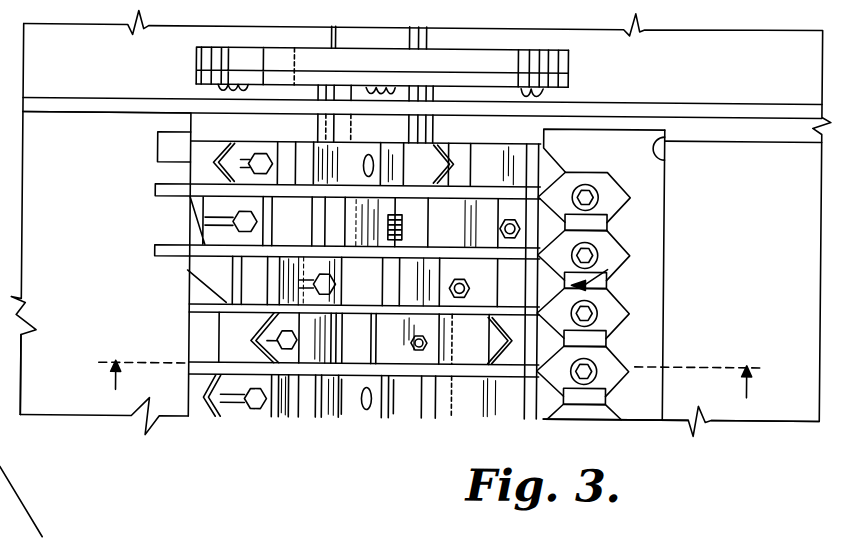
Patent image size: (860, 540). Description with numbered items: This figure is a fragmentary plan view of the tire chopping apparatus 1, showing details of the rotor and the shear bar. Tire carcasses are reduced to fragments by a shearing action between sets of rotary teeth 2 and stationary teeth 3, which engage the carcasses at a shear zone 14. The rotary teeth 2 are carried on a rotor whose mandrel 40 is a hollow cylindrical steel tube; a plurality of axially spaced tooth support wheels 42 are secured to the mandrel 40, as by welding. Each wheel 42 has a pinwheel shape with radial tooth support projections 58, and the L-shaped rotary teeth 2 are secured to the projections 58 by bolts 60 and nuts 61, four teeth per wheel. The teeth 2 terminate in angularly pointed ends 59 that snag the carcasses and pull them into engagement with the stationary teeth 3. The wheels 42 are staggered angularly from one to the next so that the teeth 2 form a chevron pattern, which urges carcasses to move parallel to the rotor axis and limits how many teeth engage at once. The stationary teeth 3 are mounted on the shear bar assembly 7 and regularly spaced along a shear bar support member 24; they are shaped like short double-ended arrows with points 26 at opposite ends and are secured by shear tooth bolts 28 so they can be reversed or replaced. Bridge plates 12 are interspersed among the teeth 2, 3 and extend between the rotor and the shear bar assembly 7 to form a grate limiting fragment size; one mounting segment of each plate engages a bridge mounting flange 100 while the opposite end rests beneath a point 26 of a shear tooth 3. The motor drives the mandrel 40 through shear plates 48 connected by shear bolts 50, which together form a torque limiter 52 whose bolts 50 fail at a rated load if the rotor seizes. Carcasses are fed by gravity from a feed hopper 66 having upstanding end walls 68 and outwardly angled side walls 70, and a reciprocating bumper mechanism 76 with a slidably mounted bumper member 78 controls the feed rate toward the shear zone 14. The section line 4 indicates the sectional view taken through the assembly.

The tire chopping apparatus 1 is at (172, 450).
The rotary teeth 2 is at (230, 400).
The stationary teeth 3 is at (622, 241).
The section line 4- 4 is at (434, 387).
The shear bar assembly 7 is at (642, 428).
The bridge plates 12 is at (188, 287).
The shear zone 14 is at (630, 256).
The shear bar support member 24 is at (622, 140).
The points 26 is at (620, 308).
The shear tooth bolts 28 is at (586, 312).
The mandrel 40 is at (330, 127).
The tooth support wheels 42 is at (342, 405).
The shear plates 48 is at (195, 73).
The shear bolts 50 is at (195, 92).
The torque limiter 52 is at (580, 69).
The radial tooth support projections 58 is at (390, 407).
The pointed ends 59 is at (188, 285).
The bolts 60 is at (259, 410).
The nuts 61 is at (424, 352).
The feed hopper 66 is at (42, 408).
The end walls 68 is at (50, 109).
The side walls 70 is at (80, 410).
The reciprocating bumper mechanism 76 is at (733, 430).
The bumper member 78 is at (665, 136).
The bridge mounting flange 100 is at (182, 131).